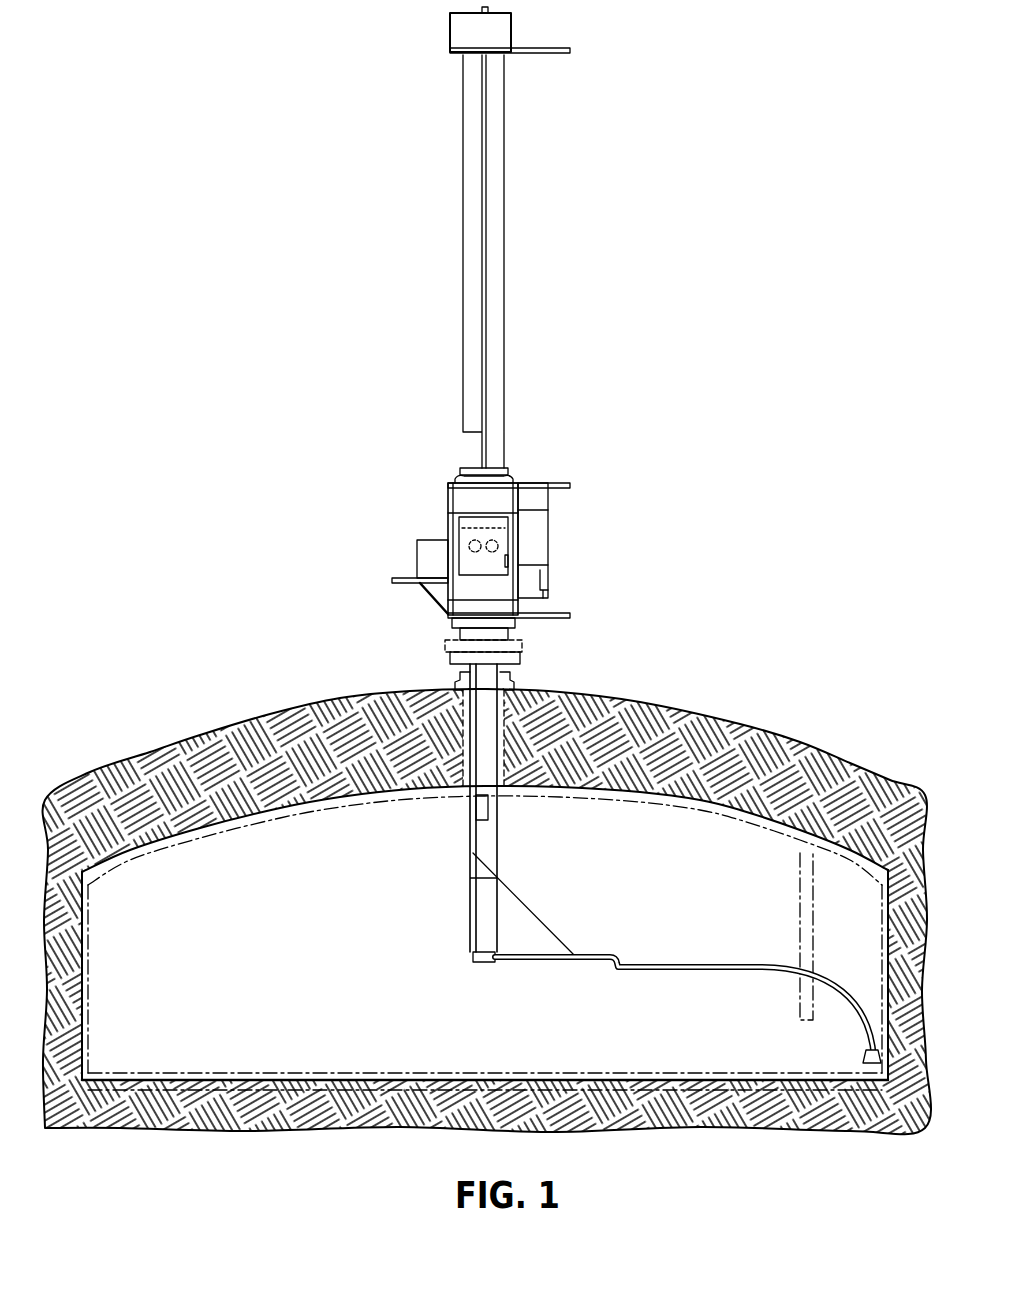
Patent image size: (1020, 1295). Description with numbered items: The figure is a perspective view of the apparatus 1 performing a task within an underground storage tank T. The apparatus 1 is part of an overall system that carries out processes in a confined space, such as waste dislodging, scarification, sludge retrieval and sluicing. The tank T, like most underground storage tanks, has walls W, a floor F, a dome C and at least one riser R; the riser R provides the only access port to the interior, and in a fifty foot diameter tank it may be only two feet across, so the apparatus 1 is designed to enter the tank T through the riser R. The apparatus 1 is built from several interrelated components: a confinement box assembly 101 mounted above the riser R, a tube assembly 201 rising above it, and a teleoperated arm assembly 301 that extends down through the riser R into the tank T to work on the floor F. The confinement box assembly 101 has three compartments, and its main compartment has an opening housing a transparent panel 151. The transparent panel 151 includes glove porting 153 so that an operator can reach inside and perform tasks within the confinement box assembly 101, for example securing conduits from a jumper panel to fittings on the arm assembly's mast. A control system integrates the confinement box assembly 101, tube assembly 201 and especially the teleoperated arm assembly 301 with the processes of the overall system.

The apparatus 1 is at (636, 535).
The tube assembly 201 is at (507, 269).
The confinement box assembly 101 is at (550, 537).
The transparent panel 151 is at (504, 540).
The glove porting 153 is at (467, 543).
The teleoperated arm assembly 301 is at (470, 843).
The riser R is at (460, 740).
The dome C is at (665, 812).
The underground storage tank T is at (207, 830).
The walls W is at (95, 990).
The floor F is at (440, 1073).